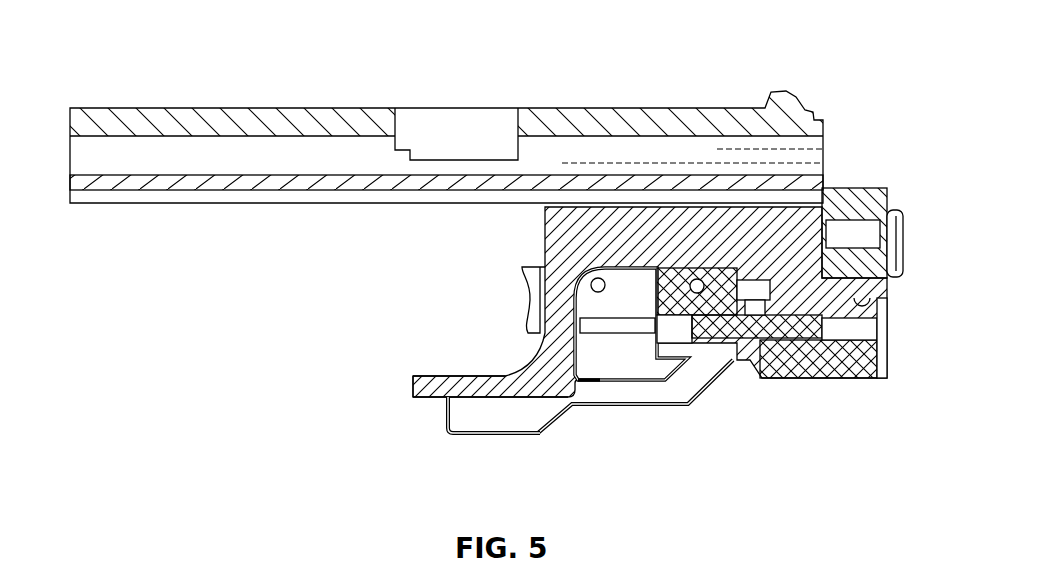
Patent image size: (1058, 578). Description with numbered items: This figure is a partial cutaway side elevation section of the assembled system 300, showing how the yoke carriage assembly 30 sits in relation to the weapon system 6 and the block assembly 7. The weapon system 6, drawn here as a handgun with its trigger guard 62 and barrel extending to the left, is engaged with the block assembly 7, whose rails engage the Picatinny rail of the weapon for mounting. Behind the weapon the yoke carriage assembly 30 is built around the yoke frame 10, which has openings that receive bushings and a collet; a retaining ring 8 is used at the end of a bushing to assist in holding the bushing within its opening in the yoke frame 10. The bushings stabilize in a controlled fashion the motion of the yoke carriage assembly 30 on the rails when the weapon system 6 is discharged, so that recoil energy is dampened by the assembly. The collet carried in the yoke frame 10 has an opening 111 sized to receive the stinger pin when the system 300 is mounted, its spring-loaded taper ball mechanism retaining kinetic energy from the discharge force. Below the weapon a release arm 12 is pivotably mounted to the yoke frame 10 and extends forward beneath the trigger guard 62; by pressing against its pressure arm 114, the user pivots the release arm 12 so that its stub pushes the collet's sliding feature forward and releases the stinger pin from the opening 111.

The system 300 is at (506, 264).
The weapon system 6 is at (204, 84).
The yoke carriage assembly 30 is at (858, 65).
The yoke frame 10 is at (853, 189).
The retaining ring 8 is at (898, 210).
The opening 111 is at (890, 333).
The block assembly 7 is at (851, 397).
The release arm 12 is at (639, 417).
The pressure arm 114 is at (494, 442).
The trigger guard 62 is at (443, 375).